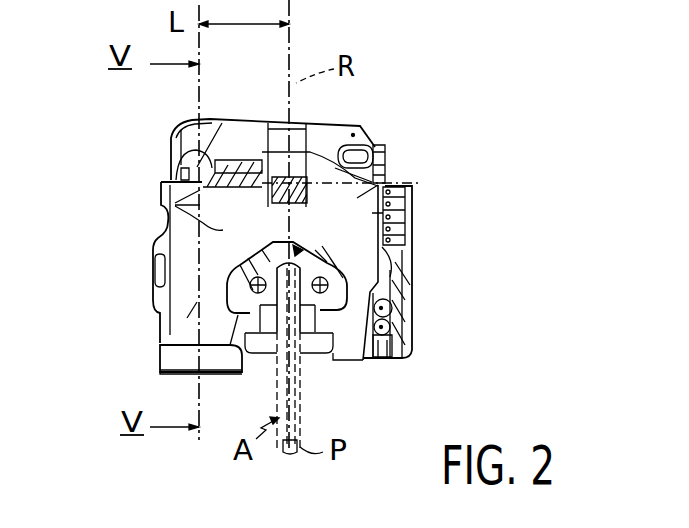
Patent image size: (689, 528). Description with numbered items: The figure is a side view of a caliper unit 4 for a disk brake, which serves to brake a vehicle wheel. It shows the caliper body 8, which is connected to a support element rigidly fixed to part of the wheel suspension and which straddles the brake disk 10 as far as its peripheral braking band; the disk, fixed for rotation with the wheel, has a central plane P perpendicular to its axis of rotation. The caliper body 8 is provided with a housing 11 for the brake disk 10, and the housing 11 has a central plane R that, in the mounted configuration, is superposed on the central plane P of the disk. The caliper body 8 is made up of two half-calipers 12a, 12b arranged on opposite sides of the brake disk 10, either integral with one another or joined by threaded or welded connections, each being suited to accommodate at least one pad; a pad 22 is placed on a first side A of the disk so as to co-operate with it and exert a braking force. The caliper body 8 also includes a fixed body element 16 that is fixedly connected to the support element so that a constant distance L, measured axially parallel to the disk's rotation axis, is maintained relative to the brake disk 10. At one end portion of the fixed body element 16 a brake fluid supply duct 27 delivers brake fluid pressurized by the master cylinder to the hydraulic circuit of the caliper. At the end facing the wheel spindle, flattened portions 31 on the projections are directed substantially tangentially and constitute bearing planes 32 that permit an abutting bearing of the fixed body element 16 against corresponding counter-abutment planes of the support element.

The caliper unit 4 is at (442, 93).
The caliper body 8 is at (279, 117).
The brake disk 10 is at (297, 382).
The housing 11 is at (295, 242).
The half-caliper 12a is at (161, 198).
The half-caliper 12b is at (362, 192).
The fixed body element 16 is at (184, 338).
The pad 22 is at (283, 240).
The brake fluid supply duct 27 is at (185, 113).
The flattened portion 31 is at (214, 376).
The bearing plane 32 is at (178, 380).